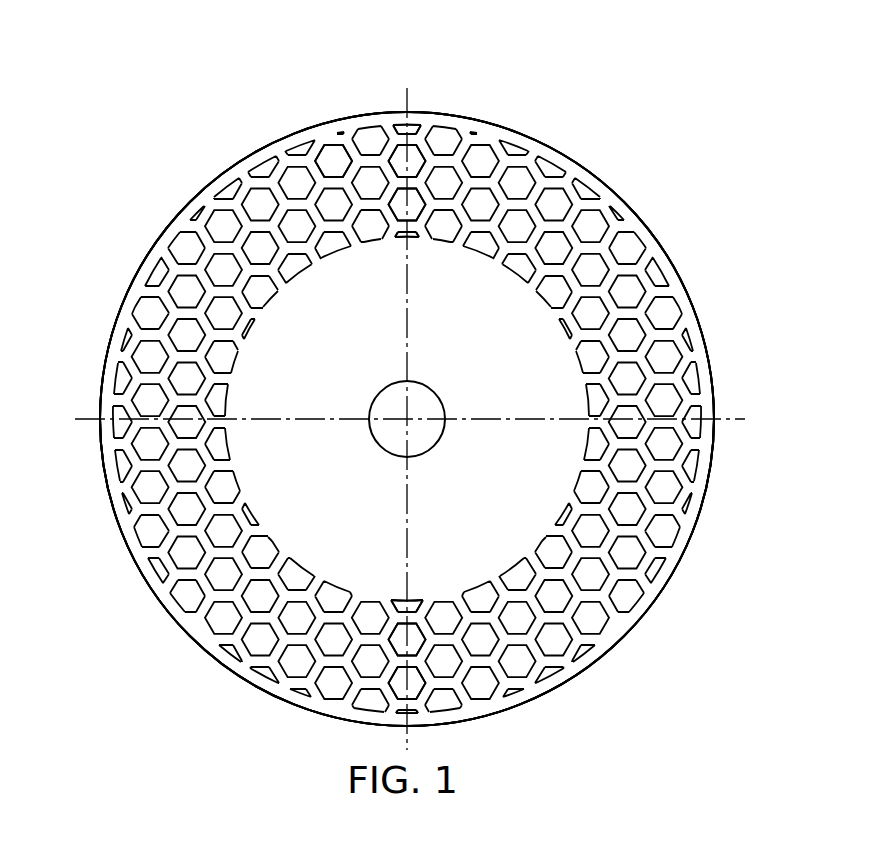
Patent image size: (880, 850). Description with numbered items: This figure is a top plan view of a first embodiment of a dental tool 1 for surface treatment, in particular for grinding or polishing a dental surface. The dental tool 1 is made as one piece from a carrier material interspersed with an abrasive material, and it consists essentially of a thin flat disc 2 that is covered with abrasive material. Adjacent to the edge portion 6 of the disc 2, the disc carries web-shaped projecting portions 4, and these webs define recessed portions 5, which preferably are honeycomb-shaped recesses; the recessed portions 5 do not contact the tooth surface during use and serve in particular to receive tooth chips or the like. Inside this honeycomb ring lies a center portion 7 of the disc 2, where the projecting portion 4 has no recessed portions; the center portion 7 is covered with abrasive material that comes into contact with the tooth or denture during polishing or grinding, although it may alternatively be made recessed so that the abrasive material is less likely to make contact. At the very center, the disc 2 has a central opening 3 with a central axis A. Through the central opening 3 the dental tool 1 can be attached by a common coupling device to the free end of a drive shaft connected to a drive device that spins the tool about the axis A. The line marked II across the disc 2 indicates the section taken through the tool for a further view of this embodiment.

The dental tool 1 is at (158, 161).
The disc 2 is at (645, 215).
The central opening 3 is at (423, 403).
The projecting portions 4 is at (467, 152).
The recessed portions 5 is at (333, 156).
The edge portion 6 is at (130, 328).
The center portion 7 is at (523, 378).
The central axis A is at (408, 420).
The section line II- II is at (403, 400).